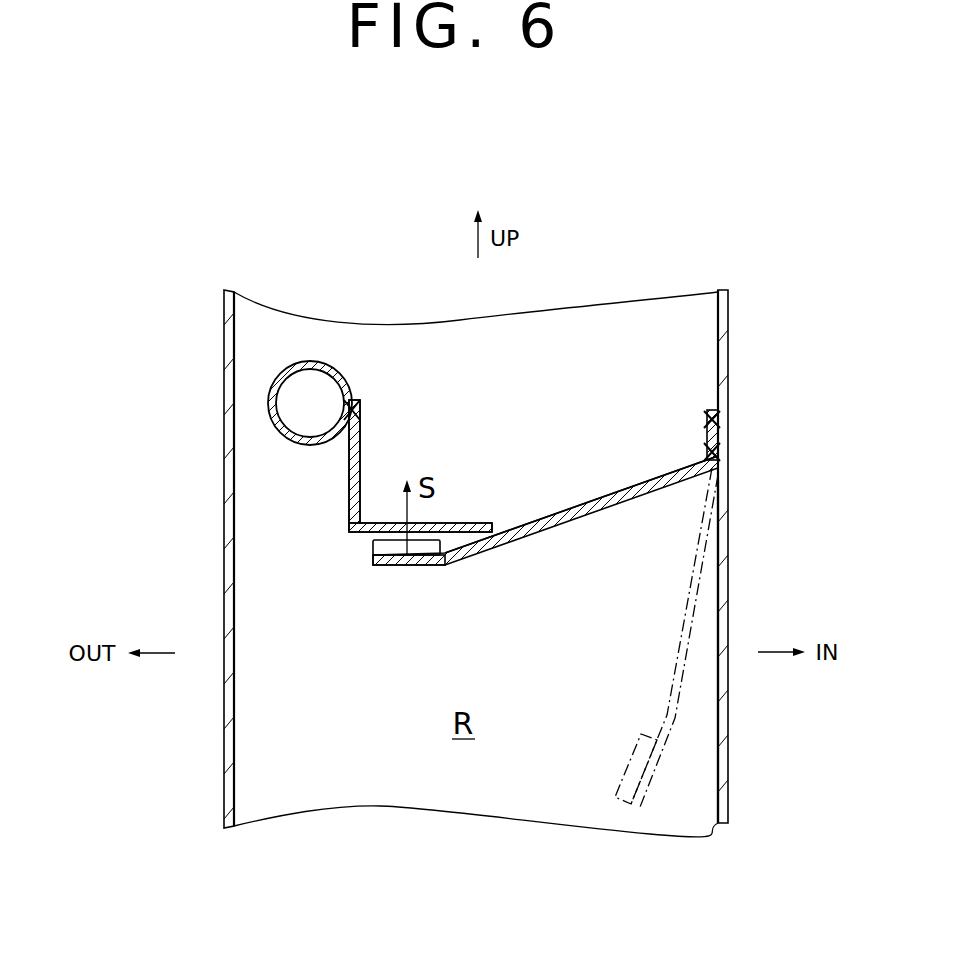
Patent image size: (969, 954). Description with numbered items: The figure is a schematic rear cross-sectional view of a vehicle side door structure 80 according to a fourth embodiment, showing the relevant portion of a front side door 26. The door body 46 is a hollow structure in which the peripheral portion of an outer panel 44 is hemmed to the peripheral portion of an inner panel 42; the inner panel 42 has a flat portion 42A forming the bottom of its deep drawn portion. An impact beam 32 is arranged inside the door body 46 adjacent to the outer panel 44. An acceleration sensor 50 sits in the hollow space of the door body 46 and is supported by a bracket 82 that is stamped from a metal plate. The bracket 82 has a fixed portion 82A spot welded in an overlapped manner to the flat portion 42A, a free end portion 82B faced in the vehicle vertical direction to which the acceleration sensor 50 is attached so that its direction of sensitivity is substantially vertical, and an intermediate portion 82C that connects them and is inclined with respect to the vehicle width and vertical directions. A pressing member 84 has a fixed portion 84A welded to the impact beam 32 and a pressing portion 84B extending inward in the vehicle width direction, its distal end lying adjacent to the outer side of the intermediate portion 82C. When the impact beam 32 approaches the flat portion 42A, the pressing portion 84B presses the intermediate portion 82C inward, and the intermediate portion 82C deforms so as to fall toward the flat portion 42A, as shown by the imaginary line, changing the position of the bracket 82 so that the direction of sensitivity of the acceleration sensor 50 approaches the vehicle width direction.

The front side door 26 is at (491, 855).
The impact beam 32 is at (310, 361).
The inner panel 42 is at (738, 797).
The flat portion 42A is at (727, 745).
The outer panel 44 is at (228, 458).
The door body 46 is at (476, 879).
The acceleration sensor 50 is at (375, 548).
The vehicle side door structure 80 is at (476, 857).
The bracket 82 is at (606, 673).
The fixed portion 82A is at (722, 437).
The free end portion 82B is at (407, 567).
The intermediate portion 82C is at (588, 514).
The pressing member 84 is at (446, 463).
The fixed portion 84A is at (362, 452).
The pressing portion 84B is at (473, 524).